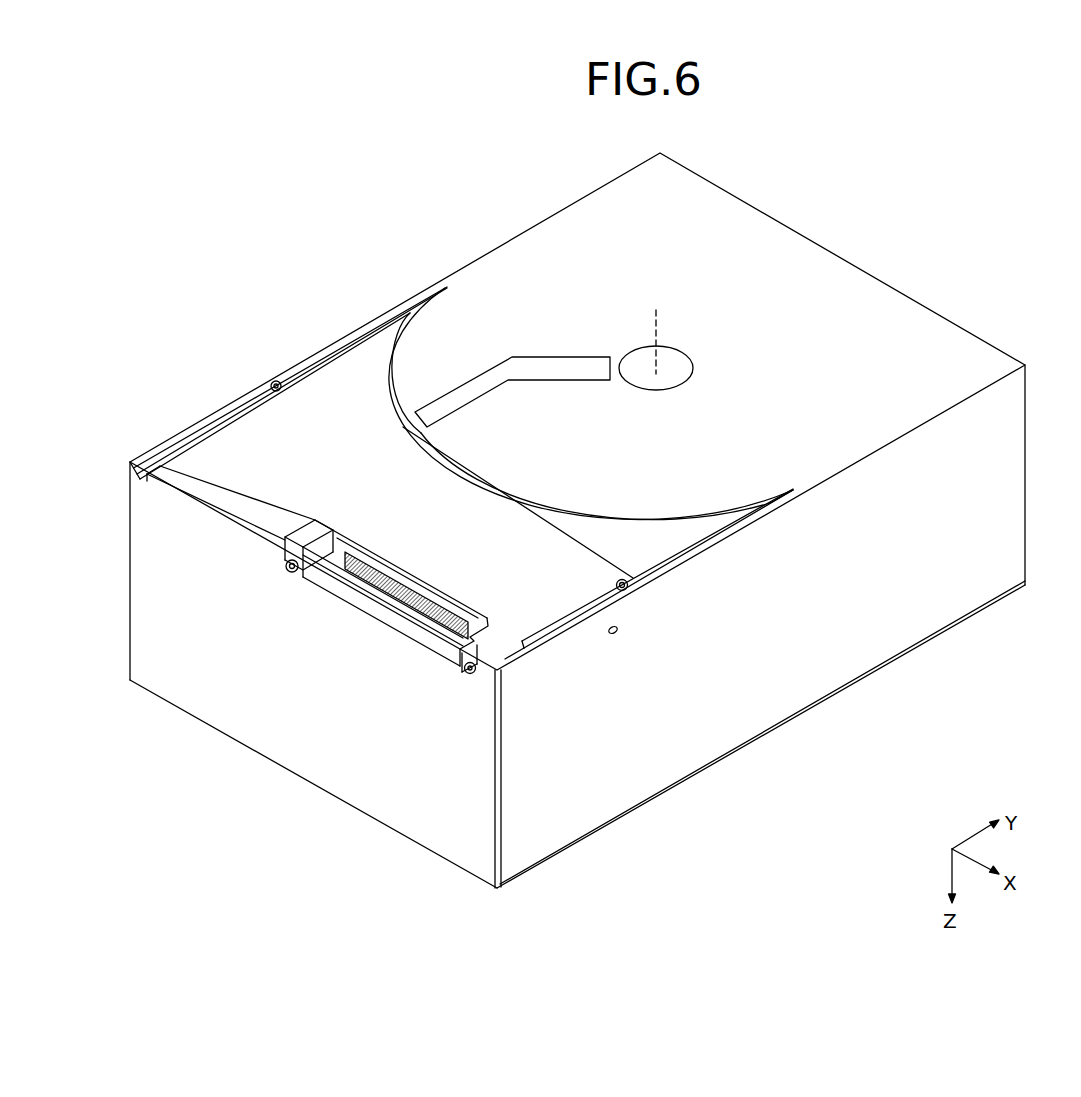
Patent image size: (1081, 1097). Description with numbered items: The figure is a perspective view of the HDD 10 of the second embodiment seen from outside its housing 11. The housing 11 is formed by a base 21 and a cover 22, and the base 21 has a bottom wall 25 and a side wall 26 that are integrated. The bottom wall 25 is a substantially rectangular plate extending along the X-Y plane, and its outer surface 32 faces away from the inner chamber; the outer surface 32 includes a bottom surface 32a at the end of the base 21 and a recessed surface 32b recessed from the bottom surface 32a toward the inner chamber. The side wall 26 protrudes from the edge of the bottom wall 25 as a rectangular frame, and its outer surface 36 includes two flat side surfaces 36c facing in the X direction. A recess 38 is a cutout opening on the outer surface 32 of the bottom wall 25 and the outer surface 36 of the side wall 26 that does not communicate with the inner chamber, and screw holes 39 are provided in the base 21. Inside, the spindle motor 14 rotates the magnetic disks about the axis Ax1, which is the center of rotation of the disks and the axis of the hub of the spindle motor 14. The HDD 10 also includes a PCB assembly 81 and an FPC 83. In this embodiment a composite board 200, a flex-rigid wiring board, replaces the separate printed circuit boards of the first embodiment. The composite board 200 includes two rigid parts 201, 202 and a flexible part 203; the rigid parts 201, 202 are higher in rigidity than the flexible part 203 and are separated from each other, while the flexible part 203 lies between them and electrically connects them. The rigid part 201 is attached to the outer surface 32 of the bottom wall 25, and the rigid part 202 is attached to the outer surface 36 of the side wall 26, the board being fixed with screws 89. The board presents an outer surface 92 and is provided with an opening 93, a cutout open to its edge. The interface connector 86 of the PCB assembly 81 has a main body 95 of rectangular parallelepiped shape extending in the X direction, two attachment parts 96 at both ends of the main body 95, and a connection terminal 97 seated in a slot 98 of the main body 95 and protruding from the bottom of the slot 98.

The HDD 10 is at (176, 183).
The housing 11 is at (595, 534).
The base 21 is at (975, 325).
The bottom wall 25 is at (577, 411).
The outer surface 32 is at (577, 411).
The bottom surface 32a is at (870, 313).
The recessed surface 32b is at (405, 327).
The cover 22 is at (921, 649).
The side wall 26 is at (720, 779).
The outer surface 36 is at (720, 779).
The side surfaces 36c is at (786, 689).
The PCB assembly 81 is at (376, 806).
The FPC 83 is at (552, 365).
The spindle motor 14 is at (670, 365).
The axis Ax1 is at (657, 318).
The rigid part 201 is at (333, 377).
The recess 38 is at (553, 622).
The screw holes 39 is at (273, 382).
The flexible part 203 is at (168, 472).
The attachment parts 96 is at (177, 485).
The outer surface 92 is at (285, 642).
The composite board 200 is at (285, 642).
The rigid part 202 is at (290, 753).
The I/F connector 86 is at (250, 459).
The main body 95 is at (291, 533).
The slot 98 is at (327, 736).
The connection terminal 97 is at (327, 736).
The opening 93 is at (330, 597).
The screws 89 is at (284, 565).